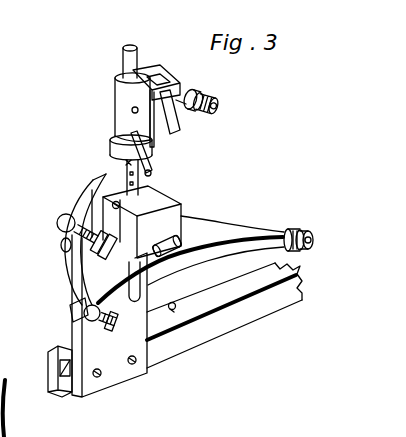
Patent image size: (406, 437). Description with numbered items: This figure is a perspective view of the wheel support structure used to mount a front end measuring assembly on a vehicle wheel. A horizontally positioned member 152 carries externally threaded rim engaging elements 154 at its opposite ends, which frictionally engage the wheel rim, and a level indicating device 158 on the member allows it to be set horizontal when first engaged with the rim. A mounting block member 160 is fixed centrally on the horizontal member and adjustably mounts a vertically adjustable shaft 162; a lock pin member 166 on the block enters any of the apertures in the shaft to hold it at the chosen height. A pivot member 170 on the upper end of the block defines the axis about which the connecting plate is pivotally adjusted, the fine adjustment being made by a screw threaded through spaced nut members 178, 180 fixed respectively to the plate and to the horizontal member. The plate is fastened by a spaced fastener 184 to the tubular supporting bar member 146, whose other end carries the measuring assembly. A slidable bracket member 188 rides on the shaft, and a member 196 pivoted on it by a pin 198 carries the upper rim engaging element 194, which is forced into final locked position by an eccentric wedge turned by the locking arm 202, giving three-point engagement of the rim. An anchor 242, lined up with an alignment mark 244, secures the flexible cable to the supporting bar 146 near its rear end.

The tubular supporting bar member 146 is at (268, 297).
The horizontally positioned member 152 is at (201, 232).
The rim engaging elements 154 is at (309, 226).
The level indicating device 158 is at (181, 252).
The mounting block member 160 is at (158, 222).
The vertically adjustable shaft 162 is at (133, 72).
The lock pin member 166 is at (112, 204).
The pivot member 170 is at (98, 178).
The nut member 178 is at (101, 252).
The nut member 180 is at (120, 322).
The spaced fastener 184 is at (97, 379).
The slidable bracket member 188 is at (117, 106).
The upper rim engaging element 194 is at (216, 104).
The member 196 is at (174, 98).
The pin 198 is at (132, 110).
The locking arm 202 is at (153, 172).
The anchor 242 is at (172, 303).
The alignment mark 244 is at (65, 355).